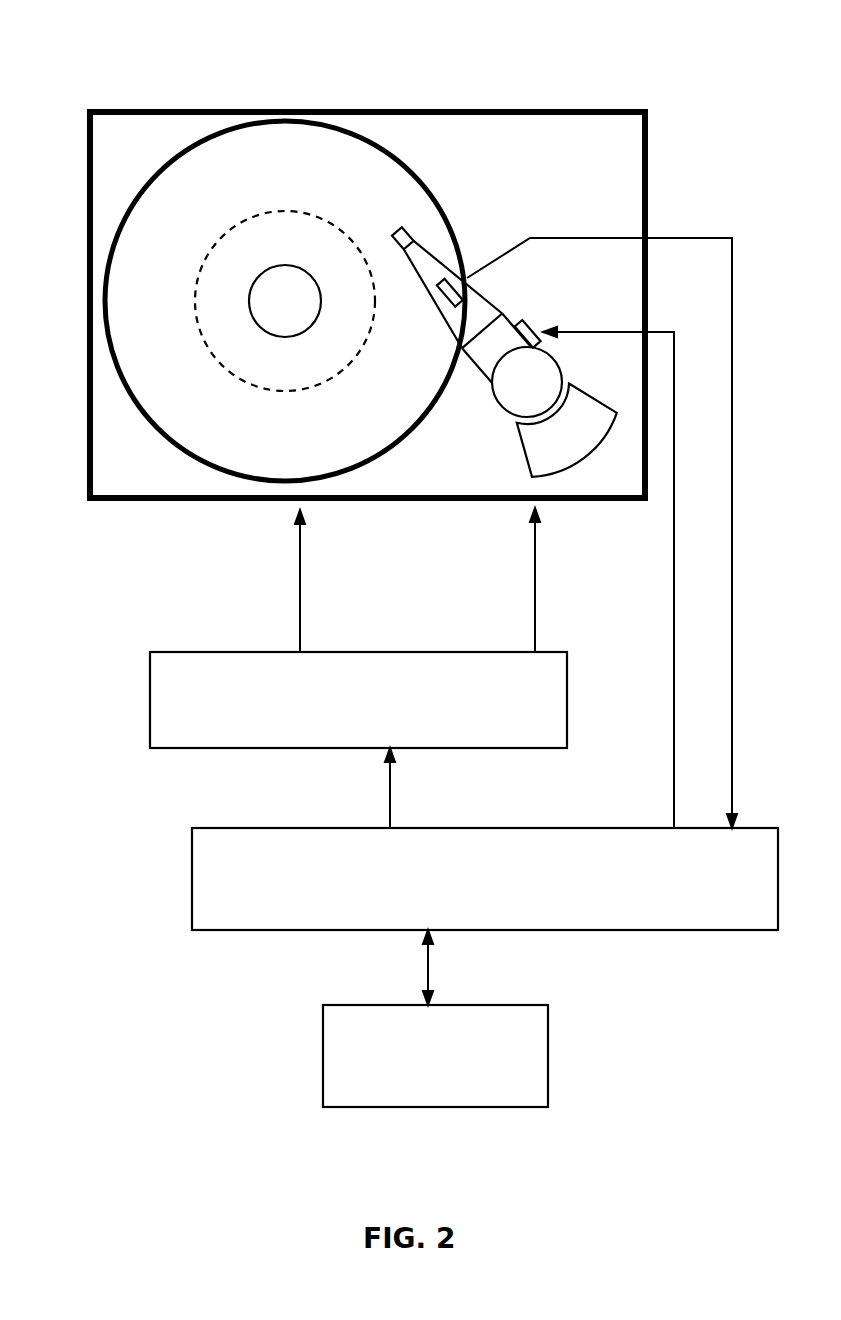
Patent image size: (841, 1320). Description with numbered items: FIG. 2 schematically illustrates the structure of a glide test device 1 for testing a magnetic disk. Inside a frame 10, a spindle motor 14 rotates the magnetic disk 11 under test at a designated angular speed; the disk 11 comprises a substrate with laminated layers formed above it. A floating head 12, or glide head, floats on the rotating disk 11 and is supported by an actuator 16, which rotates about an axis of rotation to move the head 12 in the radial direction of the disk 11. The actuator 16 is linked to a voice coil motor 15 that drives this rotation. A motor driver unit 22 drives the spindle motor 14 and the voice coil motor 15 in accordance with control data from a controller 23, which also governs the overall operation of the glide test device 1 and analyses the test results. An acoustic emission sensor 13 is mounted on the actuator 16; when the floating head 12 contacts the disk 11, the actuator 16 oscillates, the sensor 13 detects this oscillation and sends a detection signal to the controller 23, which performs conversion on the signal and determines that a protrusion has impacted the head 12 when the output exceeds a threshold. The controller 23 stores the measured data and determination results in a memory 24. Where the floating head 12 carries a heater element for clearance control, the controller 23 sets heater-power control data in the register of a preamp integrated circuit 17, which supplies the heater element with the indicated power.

The glide test device 1 is at (404, 558).
The frame 10 is at (337, 305).
The magnetic disk 11 is at (285, 262).
The floating head 12 is at (448, 258).
The acoustic emission sensor 13 is at (479, 292).
The spindle motor 14 is at (244, 261).
The voice coil motor 15 is at (575, 410).
The actuator 16 is at (487, 391).
The preamp integrated circuit 17 is at (551, 319).
The motor driver unit 22 is at (359, 737).
The controller 23 is at (616, 891).
The memory 24 is at (435, 1056).